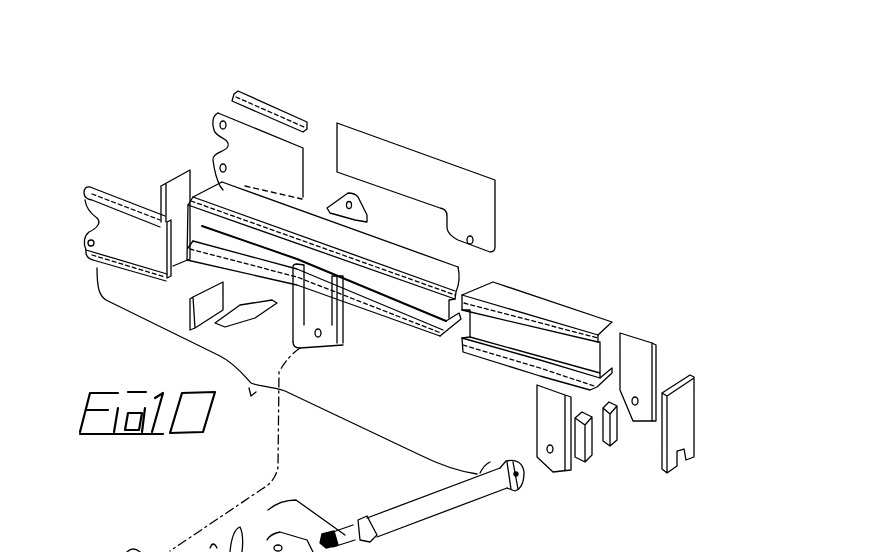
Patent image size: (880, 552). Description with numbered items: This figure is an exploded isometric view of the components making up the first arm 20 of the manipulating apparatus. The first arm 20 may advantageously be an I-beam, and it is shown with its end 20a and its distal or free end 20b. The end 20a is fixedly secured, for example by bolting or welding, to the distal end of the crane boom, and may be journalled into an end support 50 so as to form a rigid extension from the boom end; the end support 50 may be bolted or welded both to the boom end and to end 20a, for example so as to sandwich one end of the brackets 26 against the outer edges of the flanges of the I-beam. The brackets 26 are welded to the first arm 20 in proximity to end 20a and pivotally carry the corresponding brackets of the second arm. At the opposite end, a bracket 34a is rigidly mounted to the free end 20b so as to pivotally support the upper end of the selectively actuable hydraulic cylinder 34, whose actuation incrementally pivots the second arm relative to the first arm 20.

The first arm 20 is at (504, 295).
The end 20a is at (223, 189).
The distal end 20b is at (586, 322).
The end support 50 is at (290, 107).
The brackets 26 is at (329, 352).
The bracket 34a is at (662, 358).
The hydraulic cylinder 34 is at (430, 510).